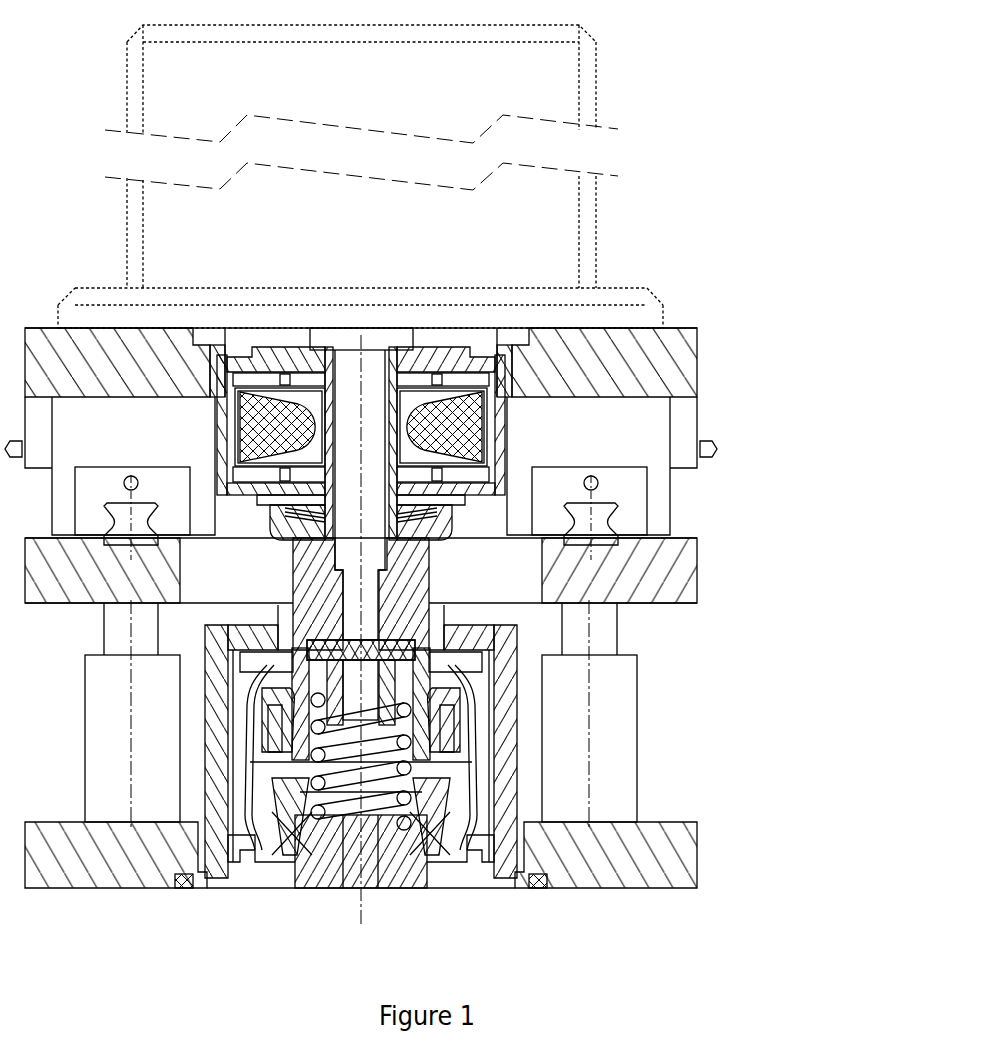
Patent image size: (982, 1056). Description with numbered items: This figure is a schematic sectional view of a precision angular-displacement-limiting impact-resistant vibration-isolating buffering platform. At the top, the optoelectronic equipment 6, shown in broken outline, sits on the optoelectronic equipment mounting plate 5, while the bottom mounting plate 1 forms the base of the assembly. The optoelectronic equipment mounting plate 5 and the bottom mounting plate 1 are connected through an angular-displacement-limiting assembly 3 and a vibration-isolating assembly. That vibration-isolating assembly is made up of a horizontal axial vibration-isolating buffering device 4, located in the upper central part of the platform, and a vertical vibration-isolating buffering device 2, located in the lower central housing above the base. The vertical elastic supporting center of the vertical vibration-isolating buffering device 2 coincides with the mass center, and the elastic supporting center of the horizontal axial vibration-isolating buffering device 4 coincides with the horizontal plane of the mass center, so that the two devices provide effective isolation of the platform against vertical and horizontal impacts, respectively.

The bottom mounting plate 1 is at (618, 855).
The vertical vibration-isolating buffering device 2 is at (505, 712).
The angular-displacement-limiting assembly 3 is at (563, 573).
The horizontal axial vibration-isolating buffering device 4 is at (510, 487).
The optoelectronic equipment mounting plate 5 is at (625, 370).
The optoelectronic equipment 6 is at (503, 255).